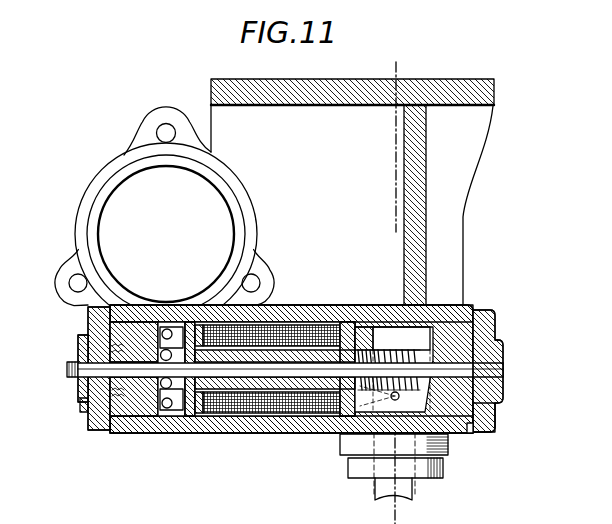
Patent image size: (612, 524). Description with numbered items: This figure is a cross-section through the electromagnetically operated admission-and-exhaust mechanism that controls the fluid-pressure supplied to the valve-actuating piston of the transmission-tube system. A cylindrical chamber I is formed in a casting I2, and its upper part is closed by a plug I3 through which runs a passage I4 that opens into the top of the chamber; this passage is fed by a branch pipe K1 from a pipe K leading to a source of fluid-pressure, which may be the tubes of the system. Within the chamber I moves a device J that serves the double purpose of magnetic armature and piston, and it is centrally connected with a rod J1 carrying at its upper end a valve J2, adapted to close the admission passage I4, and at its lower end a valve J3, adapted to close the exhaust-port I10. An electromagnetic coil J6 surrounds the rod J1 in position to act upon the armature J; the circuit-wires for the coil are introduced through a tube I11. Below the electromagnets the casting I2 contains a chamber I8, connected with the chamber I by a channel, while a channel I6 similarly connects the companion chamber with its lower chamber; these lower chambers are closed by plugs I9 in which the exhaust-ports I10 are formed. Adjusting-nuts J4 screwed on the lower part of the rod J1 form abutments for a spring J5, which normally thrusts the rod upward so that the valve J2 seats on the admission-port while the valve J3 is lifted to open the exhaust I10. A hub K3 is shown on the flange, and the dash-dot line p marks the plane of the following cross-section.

The chamber I is at (142, 434).
The casting I2 is at (203, 434).
The plug I3 is at (128, 435).
The passage or channel I4 is at (80, 343).
The channel I6 is at (435, 282).
The chamber I8 is at (367, 305).
The plug I9 is at (495, 420).
The exhaust-port I10 is at (503, 390).
The tube I11 is at (376, 483).
The armature and piston J is at (170, 434).
The rod J1 is at (257, 370).
The valve J2 is at (88, 411).
The valve J3 is at (452, 436).
The adjusting-nuts J4 is at (348, 281).
The spring J5 is at (390, 305).
The electromagnetic coil J6 is at (260, 434).
The pipe K is at (164, 216).
The branch pipe K1 is at (78, 364).
The flange hub K3 is at (174, 311).
The section line p p is at (384, 290).